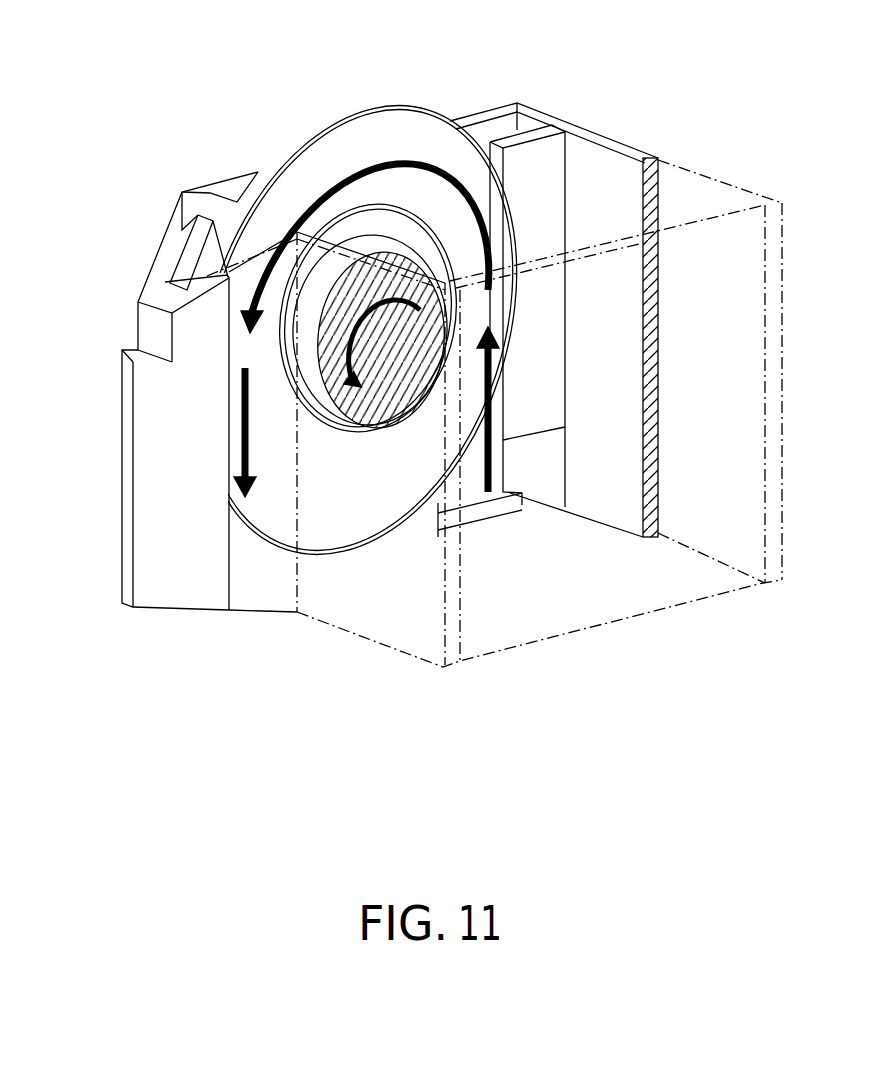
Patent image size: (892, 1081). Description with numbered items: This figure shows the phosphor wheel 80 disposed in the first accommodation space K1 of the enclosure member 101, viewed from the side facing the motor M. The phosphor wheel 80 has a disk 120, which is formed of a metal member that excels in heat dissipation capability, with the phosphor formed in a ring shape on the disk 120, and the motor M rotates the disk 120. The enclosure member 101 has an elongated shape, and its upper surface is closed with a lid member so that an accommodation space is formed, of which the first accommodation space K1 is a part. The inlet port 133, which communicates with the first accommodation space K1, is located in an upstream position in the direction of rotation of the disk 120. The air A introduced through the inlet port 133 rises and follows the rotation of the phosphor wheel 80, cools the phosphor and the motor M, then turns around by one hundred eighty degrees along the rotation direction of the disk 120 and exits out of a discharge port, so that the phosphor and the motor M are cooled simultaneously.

The enclosure member 101 is at (598, 207).
The disk 120 is at (388, 101).
The phosphor wheel 80 is at (378, 505).
The inlet port 133 is at (519, 465).
The first accommodation space K1 is at (643, 161).
The motor M is at (370, 436).
The air A is at (243, 416).